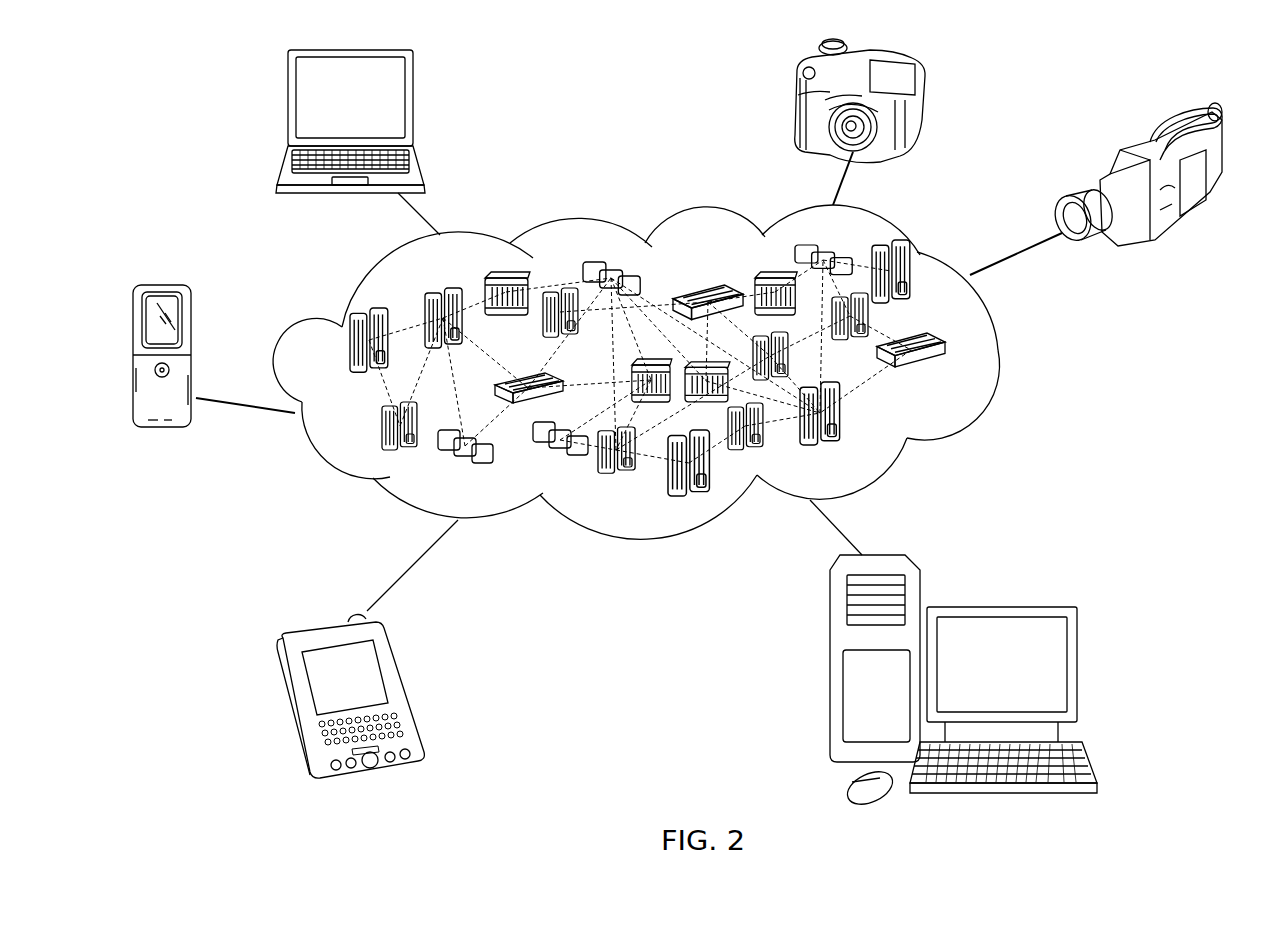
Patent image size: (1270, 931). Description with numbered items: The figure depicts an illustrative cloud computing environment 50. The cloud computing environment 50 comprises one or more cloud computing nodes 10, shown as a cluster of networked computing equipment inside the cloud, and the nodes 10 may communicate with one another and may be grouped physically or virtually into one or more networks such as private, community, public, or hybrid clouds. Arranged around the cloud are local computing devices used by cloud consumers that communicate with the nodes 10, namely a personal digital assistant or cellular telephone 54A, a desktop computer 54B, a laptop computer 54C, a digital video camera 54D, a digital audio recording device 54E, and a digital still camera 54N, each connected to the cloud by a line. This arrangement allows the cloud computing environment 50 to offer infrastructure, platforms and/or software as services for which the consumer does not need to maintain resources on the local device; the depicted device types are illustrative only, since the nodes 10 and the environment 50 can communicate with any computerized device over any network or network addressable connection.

The cloud computing nodes 10 is at (955, 378).
The cloud computing environment 50 is at (662, 372).
The personal digital assistant or cellular telephone 54A is at (405, 688).
The desktop computer 54B is at (1000, 607).
The laptop computer 54C is at (413, 105).
The digital video camera 54D is at (1150, 238).
The digital audio recording device 54E is at (153, 430).
The digital still camera 54N is at (800, 106).